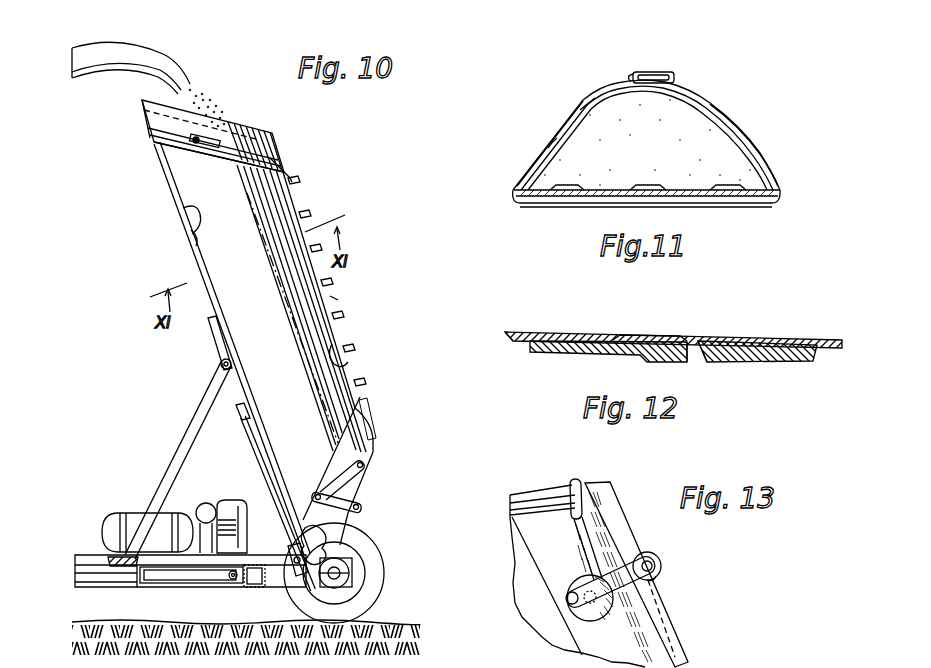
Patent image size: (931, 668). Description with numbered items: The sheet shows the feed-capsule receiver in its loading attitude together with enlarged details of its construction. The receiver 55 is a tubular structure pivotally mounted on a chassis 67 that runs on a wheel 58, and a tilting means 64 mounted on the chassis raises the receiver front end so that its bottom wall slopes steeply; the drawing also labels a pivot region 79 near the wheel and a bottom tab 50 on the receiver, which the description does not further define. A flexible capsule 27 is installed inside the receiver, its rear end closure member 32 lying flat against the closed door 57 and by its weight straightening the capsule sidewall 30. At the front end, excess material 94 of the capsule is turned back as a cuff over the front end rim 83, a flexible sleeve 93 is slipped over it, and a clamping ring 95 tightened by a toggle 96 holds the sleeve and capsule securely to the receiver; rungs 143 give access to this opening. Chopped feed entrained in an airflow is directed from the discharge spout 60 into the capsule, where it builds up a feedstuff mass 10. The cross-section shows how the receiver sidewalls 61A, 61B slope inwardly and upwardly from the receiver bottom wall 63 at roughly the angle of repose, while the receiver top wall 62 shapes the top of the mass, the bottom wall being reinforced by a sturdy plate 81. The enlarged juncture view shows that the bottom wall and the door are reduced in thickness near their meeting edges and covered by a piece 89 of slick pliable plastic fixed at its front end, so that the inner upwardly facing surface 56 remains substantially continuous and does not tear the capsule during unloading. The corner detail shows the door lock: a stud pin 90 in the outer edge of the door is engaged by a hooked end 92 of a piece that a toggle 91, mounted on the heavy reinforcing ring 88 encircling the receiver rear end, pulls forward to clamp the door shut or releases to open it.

In FIG. 11, the feedstuff mass 10 is at (647, 142).
In FIG. 10, the capsule 27 is at (230, 182).
In FIG. 11, the capsule 27 is at (582, 116).
In FIG. 10, the capsule sidewall 30 is at (179, 214).
In FIG. 11, the capsule sidewall 30 is at (552, 148).
In FIG. 10, the rear end closure member 32 is at (348, 568).
In FIG. 11, the tab 50 is at (565, 186).
In FIG. 10, the receiver 55 is at (294, 191).
In FIG. 11, the receiver 55 is at (643, 77).
In FIG. 13, the receiver 55 is at (512, 585).
In FIG. 10, the upwardly facing surface 56 is at (199, 234).
In FIG. 11, the upwardly facing surface 56 is at (687, 189).
In FIG. 12, the upwardly facing surface 56 is at (569, 332).
In FIG. 10, the door 57 is at (360, 522).
In FIG. 12, the door 57 is at (827, 358).
In FIG. 13, the door 57 is at (685, 641).
In FIG. 10, the wheel 58 is at (384, 596).
In FIG. 10, the discharge spout 60 is at (184, 64).
In FIG. 10, the receiver sidewall 61A is at (246, 348).
In FIG. 11, the receiver sidewall 61A is at (563, 144).
In FIG. 11, the receiver sidewall 61B is at (747, 153).
In FIG. 10, the receiver top wall 62 is at (357, 386).
In FIG. 11, the receiver top wall 62 is at (686, 96).
In FIG. 11, the receiver bottom wall 63 is at (590, 205).
In FIG. 12, the receiver bottom wall 63 is at (513, 347).
In FIG. 10, the tilting means 64 is at (160, 460).
In FIG. 10, the chassis 67 is at (80, 550).
In FIG. 10, the lift rod 79 is at (303, 590).
In FIG. 11, the reinforcing plate 81 is at (727, 208).
In FIG. 12, the reinforcing plate 81 is at (552, 355).
In FIG. 10, the front end rim 83 is at (142, 114).
In FIG. 13, the reinforcing ring 88 is at (547, 577).
In FIG. 12, the plastic piece 89 is at (700, 338).
In FIG. 13, the stud pin 90 is at (656, 565).
In FIG. 13, the toggle 91 is at (575, 530).
In FIG. 13, the hooked end 92 is at (659, 579).
In FIG. 10, the flexible sleeve 93 is at (240, 130).
In FIG. 10, the excess material 94 is at (216, 158).
In FIG. 10, the clamping ring 95 is at (285, 174).
In FIG. 10, the toggle 96 is at (207, 137).
In FIG. 10, the rungs 143 is at (332, 297).
In FIG. 11, the rungs 143 is at (656, 72).